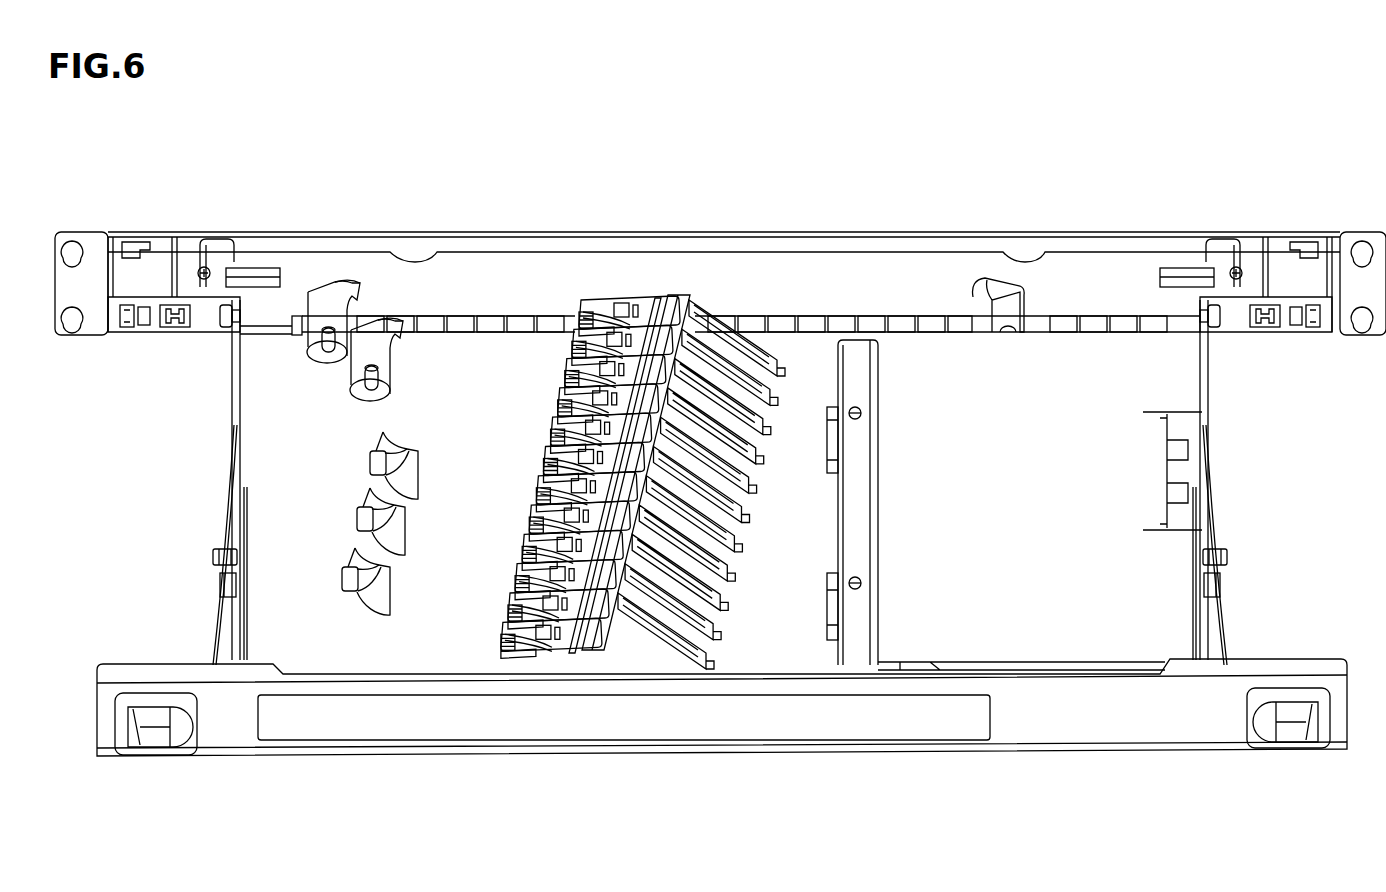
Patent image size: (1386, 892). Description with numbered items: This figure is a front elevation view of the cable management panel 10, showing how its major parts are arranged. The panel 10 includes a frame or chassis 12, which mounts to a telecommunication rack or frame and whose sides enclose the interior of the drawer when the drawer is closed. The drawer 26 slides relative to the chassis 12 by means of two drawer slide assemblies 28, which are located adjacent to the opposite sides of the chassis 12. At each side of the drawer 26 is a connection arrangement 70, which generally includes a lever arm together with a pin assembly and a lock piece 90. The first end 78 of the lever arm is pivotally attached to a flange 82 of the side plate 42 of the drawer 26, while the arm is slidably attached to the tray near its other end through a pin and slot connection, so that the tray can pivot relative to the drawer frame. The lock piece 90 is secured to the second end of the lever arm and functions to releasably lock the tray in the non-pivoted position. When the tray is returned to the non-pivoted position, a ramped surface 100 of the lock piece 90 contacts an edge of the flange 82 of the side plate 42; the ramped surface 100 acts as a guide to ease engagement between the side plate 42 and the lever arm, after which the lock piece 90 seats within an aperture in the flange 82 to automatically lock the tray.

The cable management panel 10 is at (350, 162).
The chassis 12 is at (660, 230).
The drawer 26 is at (1090, 770).
The drawer slide assemblies 28 is at (163, 340).
The side plate 42 is at (177, 300).
The connection arrangement 70 is at (172, 545).
The first end 78 is at (216, 363).
The flange 82 is at (238, 318).
The lock piece 90 is at (222, 582).
The ramped surface 100 is at (228, 588).